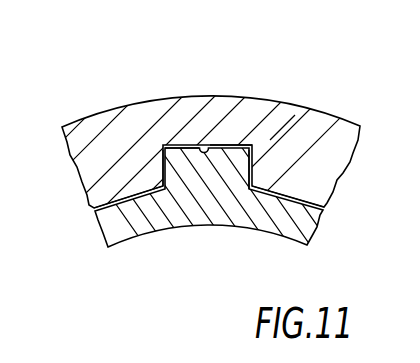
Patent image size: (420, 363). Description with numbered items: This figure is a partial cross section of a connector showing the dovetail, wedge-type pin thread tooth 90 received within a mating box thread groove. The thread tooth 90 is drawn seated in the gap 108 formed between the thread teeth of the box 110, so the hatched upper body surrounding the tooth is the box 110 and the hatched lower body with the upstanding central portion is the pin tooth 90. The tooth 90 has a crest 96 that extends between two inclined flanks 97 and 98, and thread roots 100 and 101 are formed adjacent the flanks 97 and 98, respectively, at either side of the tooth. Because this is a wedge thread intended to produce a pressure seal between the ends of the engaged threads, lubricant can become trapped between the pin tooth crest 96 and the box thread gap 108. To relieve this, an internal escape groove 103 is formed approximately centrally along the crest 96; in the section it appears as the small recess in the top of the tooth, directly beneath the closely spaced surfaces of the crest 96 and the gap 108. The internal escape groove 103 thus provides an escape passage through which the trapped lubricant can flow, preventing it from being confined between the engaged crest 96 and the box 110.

The thread tooth 90 is at (283, 130).
The crest 96 is at (190, 146).
The inclined flank 97 is at (160, 157).
The inclined flank 98 is at (253, 184).
The thread root 100 is at (115, 197).
The thread root 101 is at (278, 192).
The internal escape groove 103 is at (205, 155).
The gap 108 is at (236, 143).
The box 110 is at (168, 97).